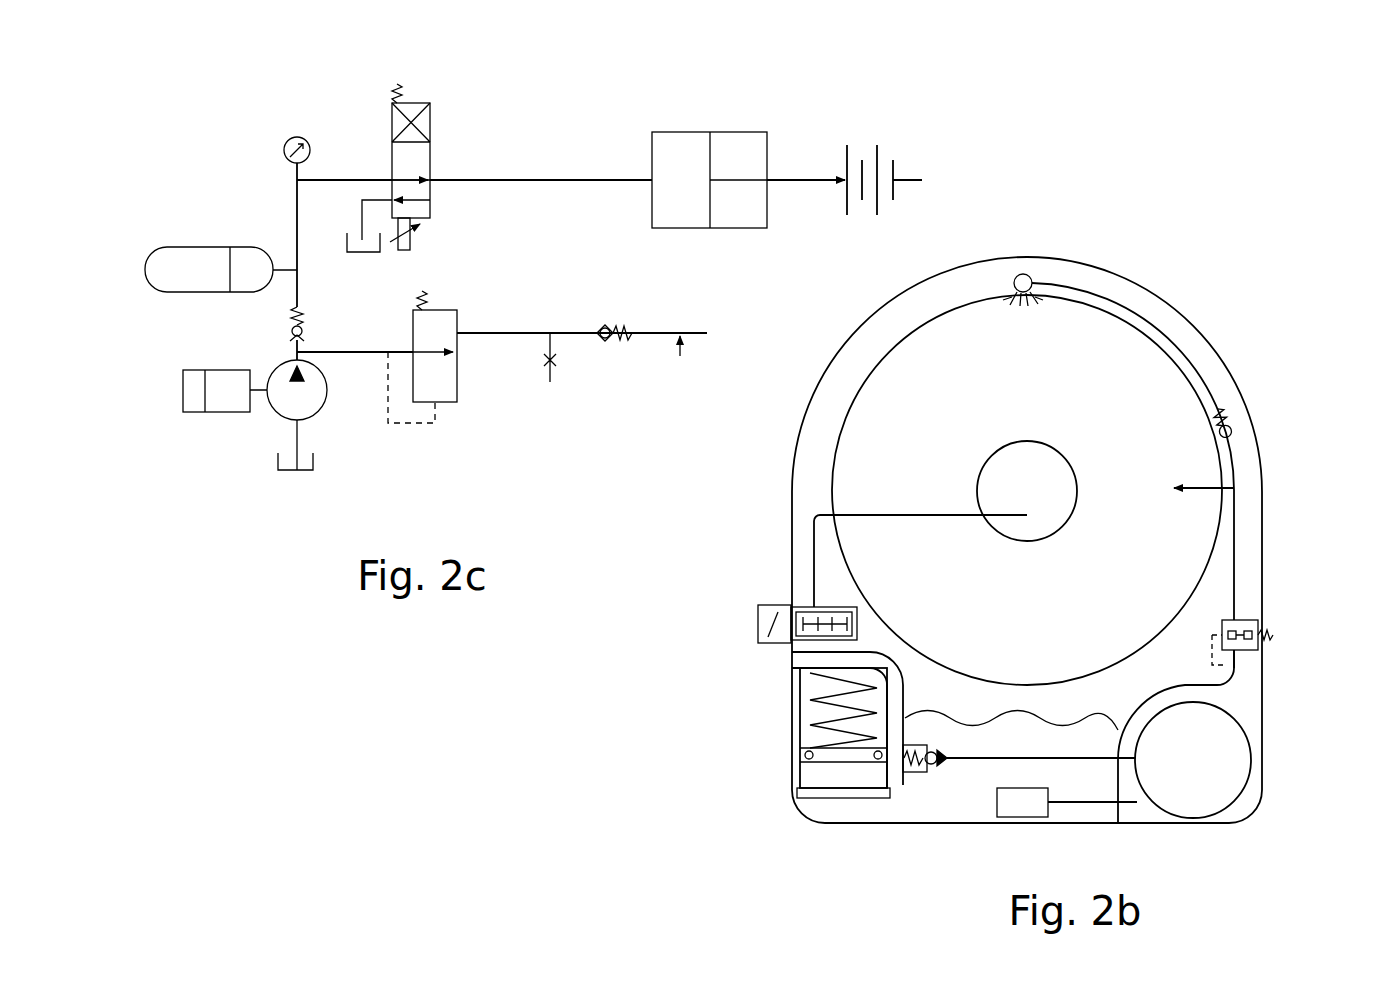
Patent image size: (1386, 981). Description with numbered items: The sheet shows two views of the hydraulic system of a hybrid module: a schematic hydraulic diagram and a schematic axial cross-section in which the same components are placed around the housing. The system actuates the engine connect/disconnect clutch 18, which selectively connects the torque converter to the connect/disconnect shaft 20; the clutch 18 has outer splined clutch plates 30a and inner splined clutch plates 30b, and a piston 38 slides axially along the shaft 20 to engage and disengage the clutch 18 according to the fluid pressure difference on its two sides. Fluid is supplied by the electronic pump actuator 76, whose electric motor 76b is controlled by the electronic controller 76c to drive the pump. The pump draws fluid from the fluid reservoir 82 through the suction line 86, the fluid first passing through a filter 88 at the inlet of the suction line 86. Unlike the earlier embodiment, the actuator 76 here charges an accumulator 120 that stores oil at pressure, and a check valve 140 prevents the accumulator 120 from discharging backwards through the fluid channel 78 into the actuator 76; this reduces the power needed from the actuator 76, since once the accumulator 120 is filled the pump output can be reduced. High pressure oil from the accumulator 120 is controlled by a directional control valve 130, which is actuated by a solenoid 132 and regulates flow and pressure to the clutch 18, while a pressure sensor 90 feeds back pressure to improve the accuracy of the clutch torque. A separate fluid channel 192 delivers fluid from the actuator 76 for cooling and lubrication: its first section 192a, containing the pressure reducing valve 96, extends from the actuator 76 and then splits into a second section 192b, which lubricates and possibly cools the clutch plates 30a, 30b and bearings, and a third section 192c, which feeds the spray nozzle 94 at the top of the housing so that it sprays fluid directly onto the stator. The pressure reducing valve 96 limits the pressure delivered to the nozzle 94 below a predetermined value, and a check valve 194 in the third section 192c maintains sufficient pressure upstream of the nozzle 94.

In FIG. 2C, the engine connect/disconnect clutch 18 is at (718, 134).
In FIG. 2B, the connect/disconnect shaft 20 is at (1005, 440).
In FIG. 2C, the outer splined clutch plates 30a is at (915, 136).
In FIG. 2C, the inner splined clutch plates 30b is at (890, 130).
In FIG. 2C, the piston 38 is at (738, 125).
In FIG. 2C, the electronic pump actuator 76 is at (274, 457).
In FIG. 2B, the electronic pump actuator 76 is at (1240, 775).
In FIG. 2C, the electric motor 76b is at (190, 416).
In FIG. 2C, the electronic controller 76c is at (323, 412).
In FIG. 2B, the fluid channel 78 is at (820, 512).
In FIG. 2C, the fluid reservoir 82 is at (320, 472).
In FIG. 2B, the fluid reservoir 82 is at (1122, 712).
In FIG. 2B, the suction line 86 is at (1110, 805).
In FIG. 2B, the filter 88 is at (1012, 814).
In FIG. 2C, the pressure sensor 90 is at (297, 135).
In FIG. 2C, the spray nozzle 94 is at (681, 358).
In FIG. 2B, the spray nozzle 94 is at (1030, 272).
In FIG. 2C, the pressure reducing valve 96 is at (465, 444).
In FIG. 2B, the pressure reducing valve 96 is at (1262, 614).
In FIG. 2C, the accumulator 120 is at (182, 245).
In FIG. 2C, the directional control valve 130 is at (410, 98).
In FIG. 2B, the directional control valve 130 is at (798, 705).
In FIG. 2B, the solenoid 132 is at (795, 604).
In FIG. 2C, the check valve 140 is at (283, 318).
In FIG. 2B, the check valve 140 is at (915, 784).
In FIG. 2B, the fluid channel 192 is at (1238, 695).
In FIG. 2C, the first section 192a is at (478, 333).
In FIG. 2B, the first section 192a is at (1237, 660).
In FIG. 2C, the second section 192b is at (550, 385).
In FIG. 2B, the second section 192b is at (1195, 495).
In FIG. 2C, the third section 192c is at (655, 333).
In FIG. 2B, the third section 192c is at (1172, 337).
In FIG. 2C, the check valve 194 is at (617, 349).
In FIG. 2B, the check valve 194 is at (1228, 405).